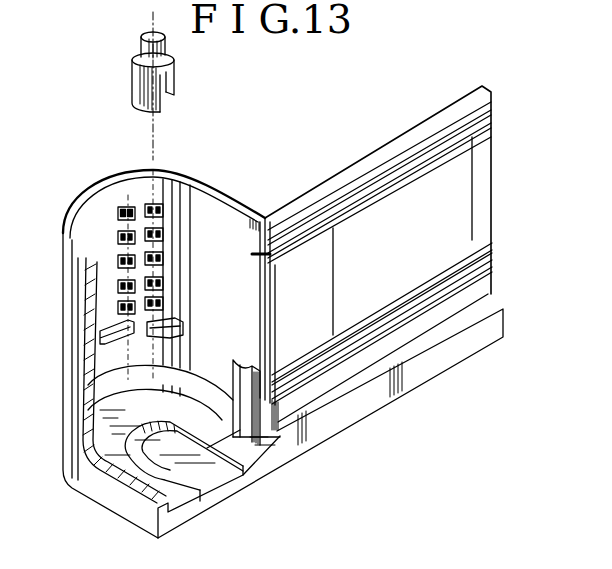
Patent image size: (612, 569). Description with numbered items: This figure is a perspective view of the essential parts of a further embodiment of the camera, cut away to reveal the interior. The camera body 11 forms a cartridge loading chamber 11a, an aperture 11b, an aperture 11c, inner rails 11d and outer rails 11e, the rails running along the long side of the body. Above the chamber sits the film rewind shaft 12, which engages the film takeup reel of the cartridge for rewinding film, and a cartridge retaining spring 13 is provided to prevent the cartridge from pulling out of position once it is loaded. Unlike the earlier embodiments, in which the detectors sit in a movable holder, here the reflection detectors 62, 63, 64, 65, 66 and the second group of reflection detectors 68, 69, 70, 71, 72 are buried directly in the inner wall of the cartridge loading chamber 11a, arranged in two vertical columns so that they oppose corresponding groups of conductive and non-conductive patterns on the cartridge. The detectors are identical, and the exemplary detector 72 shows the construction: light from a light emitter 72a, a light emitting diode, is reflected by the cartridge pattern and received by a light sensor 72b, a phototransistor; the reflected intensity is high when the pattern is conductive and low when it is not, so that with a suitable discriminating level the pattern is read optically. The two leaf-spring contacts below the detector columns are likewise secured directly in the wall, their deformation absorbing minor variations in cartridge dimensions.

The camera body 11 is at (383, 400).
The cartridge loading chamber 11a is at (222, 208).
The aperture 11b is at (450, 72).
The aperture 11c is at (470, 200).
The inner rails 11d is at (493, 124).
The outer rails 11e is at (492, 99).
The film rewind shaft 12 is at (136, 77).
The cartridge retaining spring 13 is at (240, 428).
The reflection detector 62 is at (163, 304).
The reflection detector 63 is at (163, 283).
The reflection detector 64 is at (163, 258).
The reflection detector 65 is at (163, 234).
The reflection detector 66 is at (160, 208).
The reflection detector 68 is at (118, 307).
The reflection detector 69 is at (118, 286).
The reflection detector 70 is at (118, 262).
The reflection detector 71 is at (118, 239).
The reflection detector 72 is at (118, 213).
The light emitter 72a is at (122, 208).
The light sensor 72b is at (130, 207).